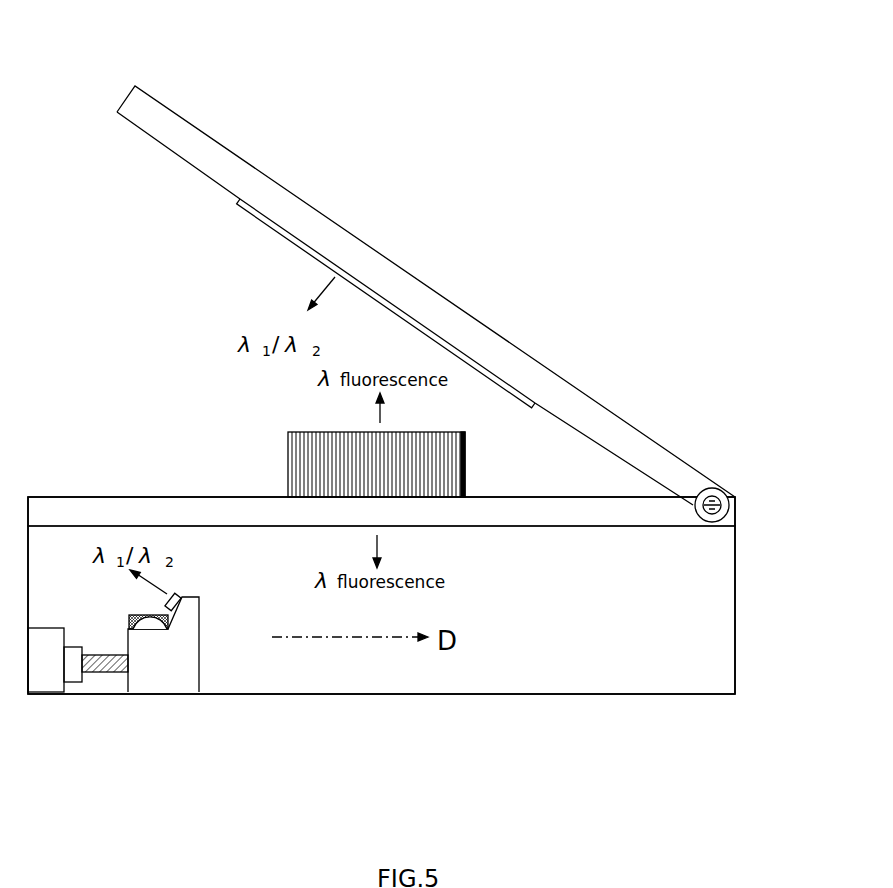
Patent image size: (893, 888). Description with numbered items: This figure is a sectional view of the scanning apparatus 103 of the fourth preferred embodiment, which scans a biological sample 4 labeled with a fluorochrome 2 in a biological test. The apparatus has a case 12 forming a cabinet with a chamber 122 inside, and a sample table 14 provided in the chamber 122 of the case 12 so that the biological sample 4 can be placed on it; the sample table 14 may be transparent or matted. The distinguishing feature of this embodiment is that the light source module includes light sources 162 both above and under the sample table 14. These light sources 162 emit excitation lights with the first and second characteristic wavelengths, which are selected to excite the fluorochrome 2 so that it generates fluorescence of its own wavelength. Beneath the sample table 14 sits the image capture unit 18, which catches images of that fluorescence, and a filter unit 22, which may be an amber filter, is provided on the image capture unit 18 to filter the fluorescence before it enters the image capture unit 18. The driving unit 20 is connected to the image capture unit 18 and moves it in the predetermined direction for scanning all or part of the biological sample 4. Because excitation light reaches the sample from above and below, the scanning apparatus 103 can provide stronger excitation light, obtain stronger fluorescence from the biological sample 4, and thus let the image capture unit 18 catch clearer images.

The scanning apparatus 103 is at (106, 45).
The case 12 is at (735, 578).
The sample table 14 is at (42, 497).
The chamber 122 is at (712, 661).
The light sources 162 is at (268, 228).
The fluorochrome 2 is at (300, 466).
The biological sample 4 is at (468, 470).
The driving unit 20 is at (110, 672).
The image capture unit 18 is at (155, 627).
The filter unit 22 is at (128, 618).